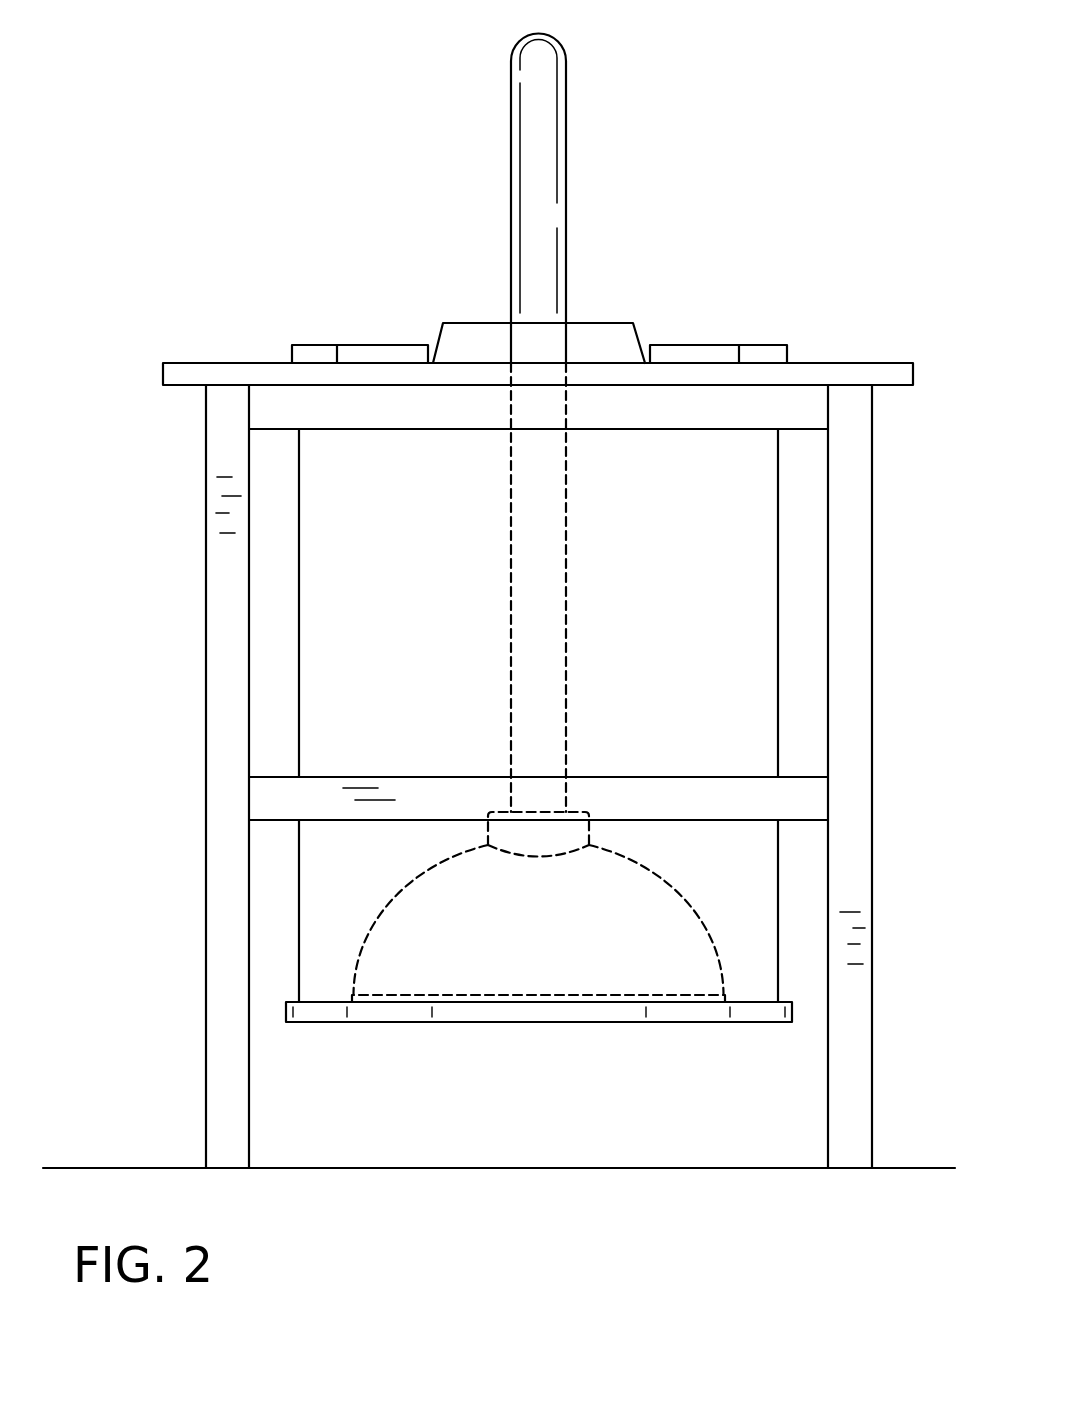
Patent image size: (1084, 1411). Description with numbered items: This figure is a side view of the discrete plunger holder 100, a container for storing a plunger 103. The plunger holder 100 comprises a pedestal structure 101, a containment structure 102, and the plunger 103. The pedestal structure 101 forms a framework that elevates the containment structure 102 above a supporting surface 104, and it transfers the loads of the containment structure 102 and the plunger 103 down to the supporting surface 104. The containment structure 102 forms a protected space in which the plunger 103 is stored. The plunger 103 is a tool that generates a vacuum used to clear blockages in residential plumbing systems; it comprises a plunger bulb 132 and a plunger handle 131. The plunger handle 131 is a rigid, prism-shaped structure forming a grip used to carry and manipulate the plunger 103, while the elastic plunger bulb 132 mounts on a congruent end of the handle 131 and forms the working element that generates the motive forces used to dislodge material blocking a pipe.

The discrete plunger holder 100 is at (776, 146).
The pedestal structure 101 is at (931, 327).
The containment structure 102 is at (371, 1051).
The plunger 103 is at (198, 207).
The supporting surface 104 is at (120, 1138).
The plunger handle 131 is at (560, 302).
The plunger bulb 132 is at (710, 955).